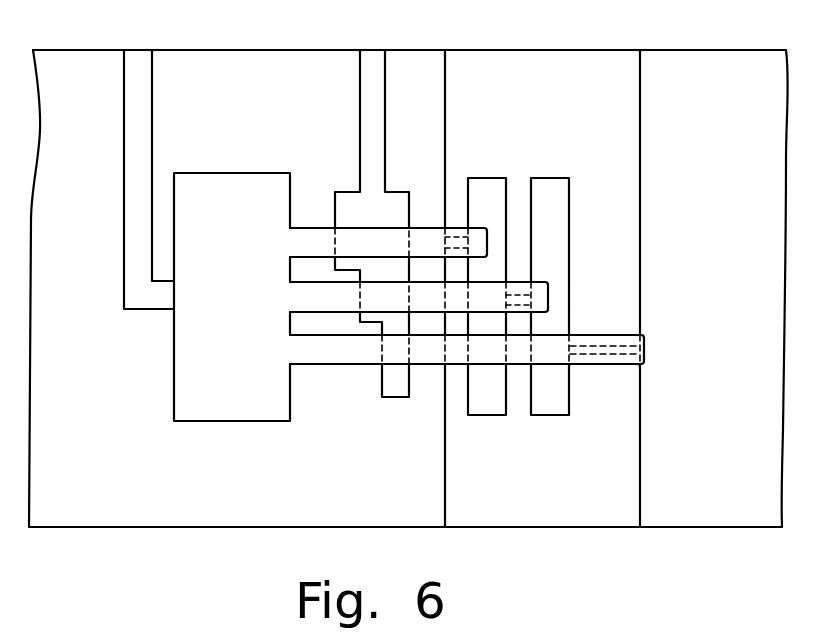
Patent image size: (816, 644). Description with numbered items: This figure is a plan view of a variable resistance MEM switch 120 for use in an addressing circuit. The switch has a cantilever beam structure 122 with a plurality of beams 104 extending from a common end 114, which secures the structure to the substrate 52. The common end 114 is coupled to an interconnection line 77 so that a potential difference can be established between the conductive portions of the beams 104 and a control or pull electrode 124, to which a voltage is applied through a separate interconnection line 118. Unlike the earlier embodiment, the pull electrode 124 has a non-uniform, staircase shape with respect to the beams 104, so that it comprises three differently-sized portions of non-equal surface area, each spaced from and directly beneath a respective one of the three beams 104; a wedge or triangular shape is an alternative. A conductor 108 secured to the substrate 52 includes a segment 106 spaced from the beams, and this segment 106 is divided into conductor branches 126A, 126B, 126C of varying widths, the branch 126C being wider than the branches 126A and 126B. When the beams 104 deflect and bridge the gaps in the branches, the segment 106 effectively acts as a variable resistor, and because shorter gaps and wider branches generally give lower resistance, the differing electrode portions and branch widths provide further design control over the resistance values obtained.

The substrate 52 is at (90, 196).
The interconnection line 77 is at (121, 258).
The beams 104 is at (640, 357).
The conductor segment 106 is at (643, 216).
The conductor 108 is at (548, 80).
The common end 114 is at (244, 412).
The interconnection line 118 is at (381, 87).
The variable resistance MEM switch 120 is at (309, 178).
The cantilever beam structure 122 is at (312, 372).
The pull electrode 124 is at (400, 198).
The conductor branch 126A is at (455, 410).
The conductor branch 126B is at (517, 410).
The conductor branch 126C is at (609, 390).